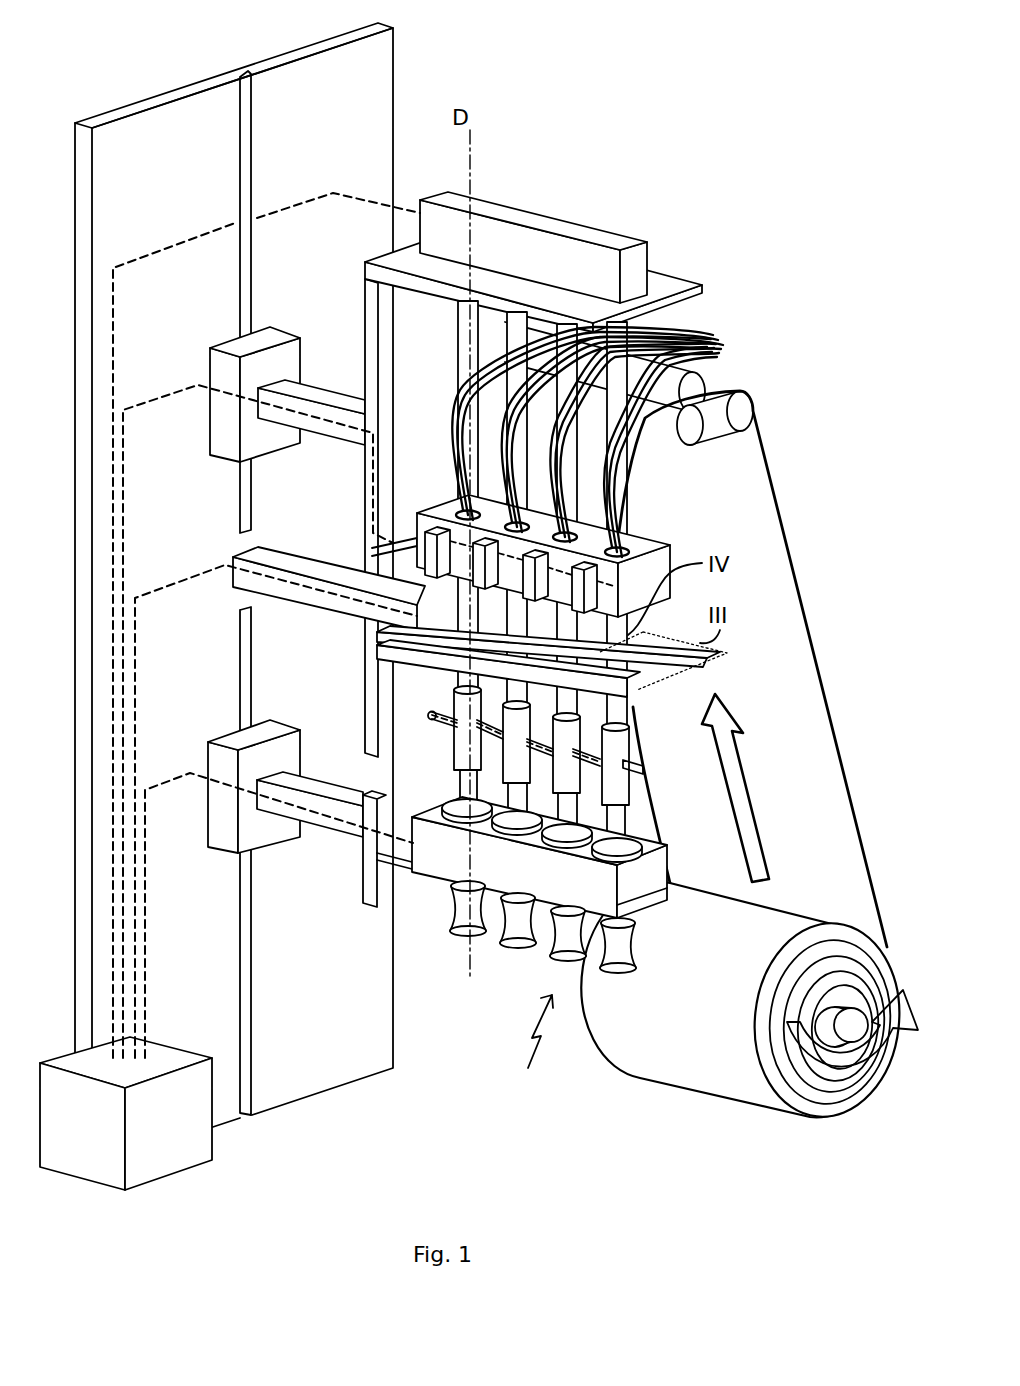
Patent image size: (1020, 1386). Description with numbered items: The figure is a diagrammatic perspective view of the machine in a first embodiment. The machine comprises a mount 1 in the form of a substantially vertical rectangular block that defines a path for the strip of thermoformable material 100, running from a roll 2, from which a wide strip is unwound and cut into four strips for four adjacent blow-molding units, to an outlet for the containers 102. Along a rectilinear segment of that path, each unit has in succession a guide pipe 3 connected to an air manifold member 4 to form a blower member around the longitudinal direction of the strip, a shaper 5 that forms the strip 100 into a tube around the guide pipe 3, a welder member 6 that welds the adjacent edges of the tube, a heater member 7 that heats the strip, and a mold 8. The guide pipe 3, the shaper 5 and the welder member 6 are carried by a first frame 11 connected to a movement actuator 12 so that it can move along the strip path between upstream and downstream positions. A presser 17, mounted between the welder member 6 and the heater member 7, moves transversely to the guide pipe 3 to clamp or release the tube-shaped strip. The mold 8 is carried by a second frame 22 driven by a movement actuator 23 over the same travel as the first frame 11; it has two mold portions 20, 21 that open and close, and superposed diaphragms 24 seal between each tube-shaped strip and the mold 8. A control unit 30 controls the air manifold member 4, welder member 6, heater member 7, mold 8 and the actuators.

The mount 1 is at (113, 142).
The roll 2 is at (803, 1098).
The guide pipe 3 is at (705, 350).
The air manifold member 4 is at (630, 242).
The shaper 5 is at (653, 542).
The welder member 6 is at (440, 530).
The heater member 7 is at (462, 743).
The mold 8 is at (438, 865).
The first frame 11 is at (680, 283).
The movement actuator 12 is at (290, 350).
The presser 17 is at (648, 728).
The mold portion 20 is at (630, 892).
The mold portion 21 is at (653, 888).
The second frame 22 is at (372, 882).
The movement actuator 23 is at (290, 745).
The diaphragm 24 is at (570, 855).
The control unit 30 is at (177, 1160).
The strip of thermoformable material 100 is at (631, 500).
The containers 102 is at (528, 1048).